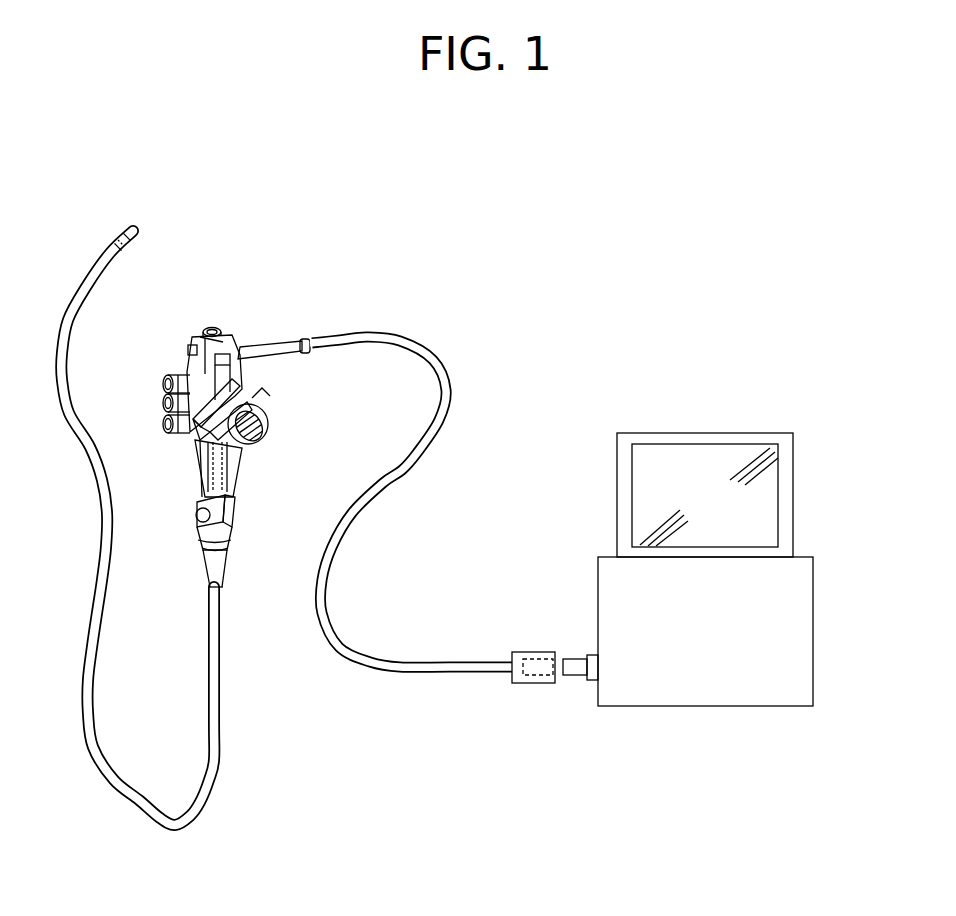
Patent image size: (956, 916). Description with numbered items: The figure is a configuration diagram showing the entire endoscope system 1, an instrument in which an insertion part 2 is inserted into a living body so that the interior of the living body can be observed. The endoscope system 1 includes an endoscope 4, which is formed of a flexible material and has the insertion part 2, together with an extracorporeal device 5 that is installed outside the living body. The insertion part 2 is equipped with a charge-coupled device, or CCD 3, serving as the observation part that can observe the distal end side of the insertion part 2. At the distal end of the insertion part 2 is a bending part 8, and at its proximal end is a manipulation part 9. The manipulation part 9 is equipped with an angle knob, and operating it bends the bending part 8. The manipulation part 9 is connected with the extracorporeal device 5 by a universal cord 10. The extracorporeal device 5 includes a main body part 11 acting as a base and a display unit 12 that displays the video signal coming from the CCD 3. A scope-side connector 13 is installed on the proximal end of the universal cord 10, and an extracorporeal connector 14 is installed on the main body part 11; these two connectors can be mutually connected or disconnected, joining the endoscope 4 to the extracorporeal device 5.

The endoscope system 1 is at (126, 202).
The insertion part 2 is at (207, 806).
The charge-coupled device (CCD) 3 is at (139, 241).
The endoscope 4 is at (397, 872).
The extracorporeal device 5 is at (662, 712).
The bending part 8 is at (126, 248).
The manipulation part 9 is at (245, 534).
The universal cord 10 is at (390, 673).
The main body part 11 is at (757, 695).
The display unit 12 is at (794, 483).
The scope-side connector 13 is at (535, 684).
The extracorporeal connector 14 is at (572, 676).